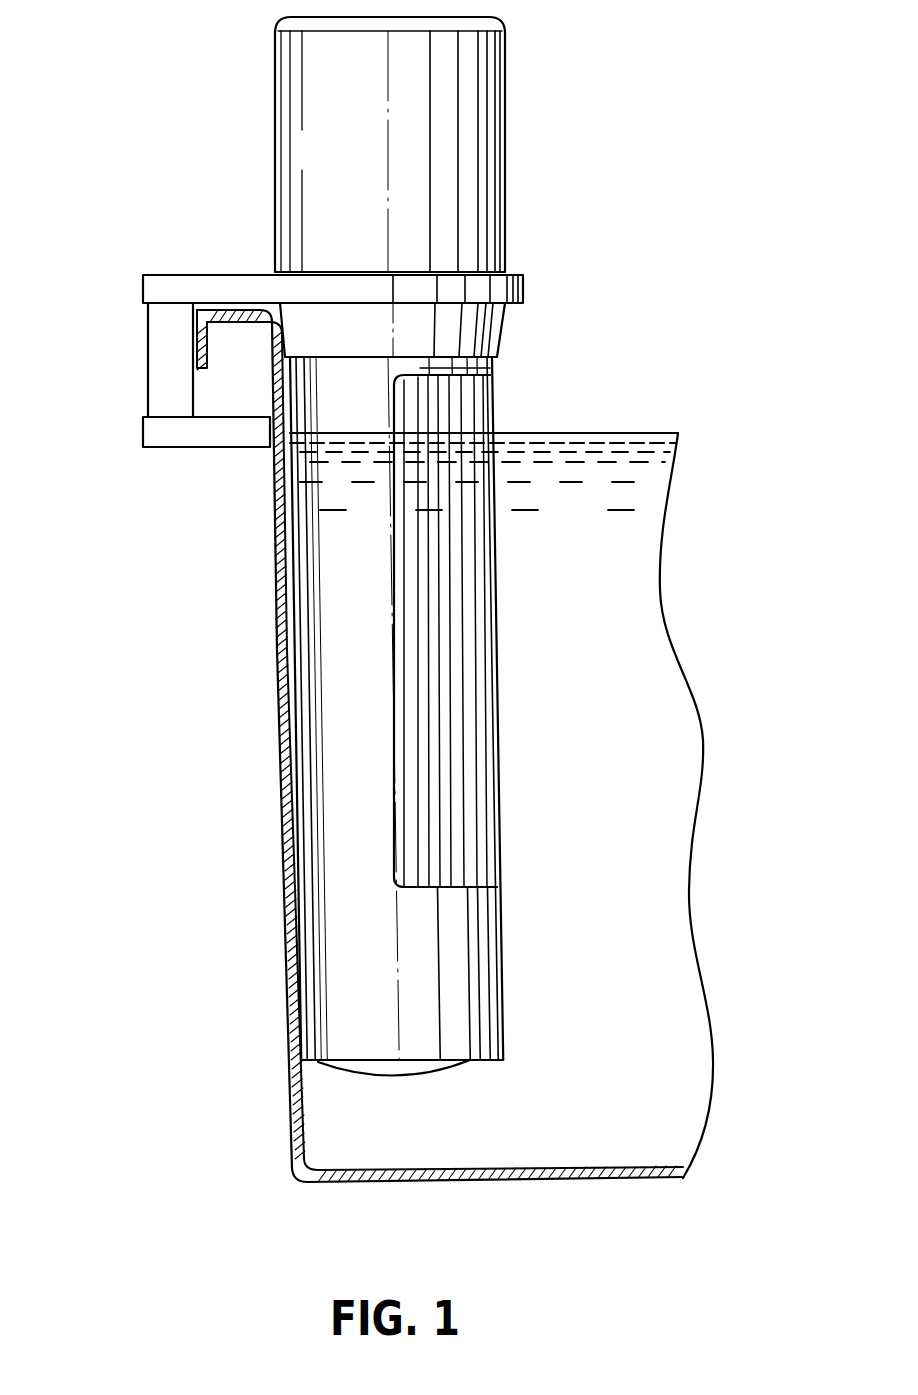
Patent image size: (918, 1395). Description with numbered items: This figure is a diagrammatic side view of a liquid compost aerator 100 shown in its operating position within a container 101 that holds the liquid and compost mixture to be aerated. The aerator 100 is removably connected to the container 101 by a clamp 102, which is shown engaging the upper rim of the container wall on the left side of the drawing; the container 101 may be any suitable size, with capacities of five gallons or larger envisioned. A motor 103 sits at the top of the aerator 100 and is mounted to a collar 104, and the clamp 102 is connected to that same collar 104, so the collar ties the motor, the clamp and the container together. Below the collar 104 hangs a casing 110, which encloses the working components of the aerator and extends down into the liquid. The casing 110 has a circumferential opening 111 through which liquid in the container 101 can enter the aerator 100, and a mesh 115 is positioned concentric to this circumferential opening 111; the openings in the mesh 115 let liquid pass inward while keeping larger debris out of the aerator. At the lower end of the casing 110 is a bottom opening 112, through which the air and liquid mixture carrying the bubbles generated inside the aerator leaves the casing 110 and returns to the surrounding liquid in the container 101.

The liquid compost aerator 100 is at (592, 172).
The container 101 is at (285, 988).
The clamp 102 is at (148, 370).
The motor 103 is at (505, 65).
The collar 104 is at (523, 284).
The casing 110 is at (490, 367).
The circumferential opening 111 is at (493, 585).
The bottom opening 112 is at (462, 1065).
The mesh 115 is at (455, 707).